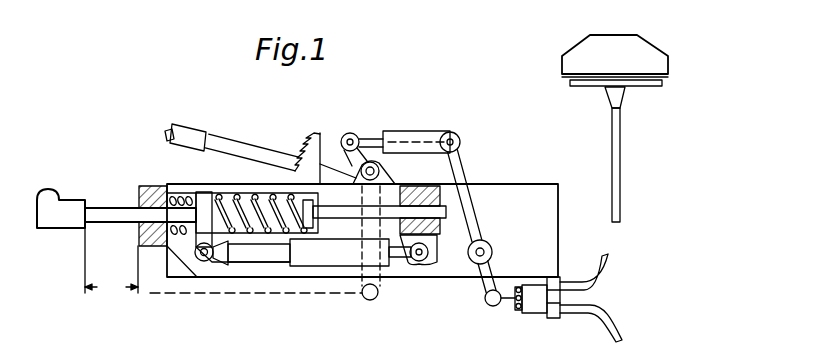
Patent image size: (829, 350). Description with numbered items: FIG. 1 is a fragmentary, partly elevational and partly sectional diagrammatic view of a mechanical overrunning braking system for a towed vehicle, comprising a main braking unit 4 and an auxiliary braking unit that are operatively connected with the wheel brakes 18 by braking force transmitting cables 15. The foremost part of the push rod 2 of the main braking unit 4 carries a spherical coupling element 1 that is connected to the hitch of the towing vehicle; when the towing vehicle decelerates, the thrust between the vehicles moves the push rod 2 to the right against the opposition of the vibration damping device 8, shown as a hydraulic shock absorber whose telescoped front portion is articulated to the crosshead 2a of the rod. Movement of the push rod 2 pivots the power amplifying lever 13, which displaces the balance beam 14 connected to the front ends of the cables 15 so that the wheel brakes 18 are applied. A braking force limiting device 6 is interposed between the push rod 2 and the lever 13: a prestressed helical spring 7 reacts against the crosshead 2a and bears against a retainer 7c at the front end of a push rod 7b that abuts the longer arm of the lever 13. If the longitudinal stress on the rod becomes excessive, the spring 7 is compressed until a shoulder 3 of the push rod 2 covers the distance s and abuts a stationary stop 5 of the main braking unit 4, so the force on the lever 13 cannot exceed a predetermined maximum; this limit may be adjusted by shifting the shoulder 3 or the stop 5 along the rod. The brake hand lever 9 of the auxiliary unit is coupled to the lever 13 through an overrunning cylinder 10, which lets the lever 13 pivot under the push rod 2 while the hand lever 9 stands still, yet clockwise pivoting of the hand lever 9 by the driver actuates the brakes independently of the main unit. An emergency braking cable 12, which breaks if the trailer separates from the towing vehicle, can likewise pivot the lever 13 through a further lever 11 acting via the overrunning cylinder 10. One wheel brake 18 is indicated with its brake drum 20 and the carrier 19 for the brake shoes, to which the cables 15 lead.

The spherical coupling element 1 is at (47, 199).
The push rod 2 is at (106, 214).
The shoulder 3 is at (88, 226).
The main braking unit 4 is at (177, 188).
The stationary stop 5 is at (140, 192).
The braking force limiting device 6 is at (226, 200).
The prestressed helical spring 7 is at (255, 200).
The push rod 7b is at (447, 212).
The retainer 7c is at (305, 222).
The crosshead 2a is at (204, 232).
The vibration damping device 8 is at (328, 257).
The brake hand lever 9 is at (196, 135).
The overrunning cylinder 10 is at (406, 138).
The further lever 11 is at (380, 289).
The emergency braking cable 12 is at (184, 295).
The power amplifying lever 13 is at (459, 165).
The balance beam 14 is at (509, 307).
The braking force transmitting cables 15 is at (618, 200).
The wheel brakes 18 is at (560, 77).
The carrier 19 is at (584, 87).
The brake drum 20 is at (643, 52).